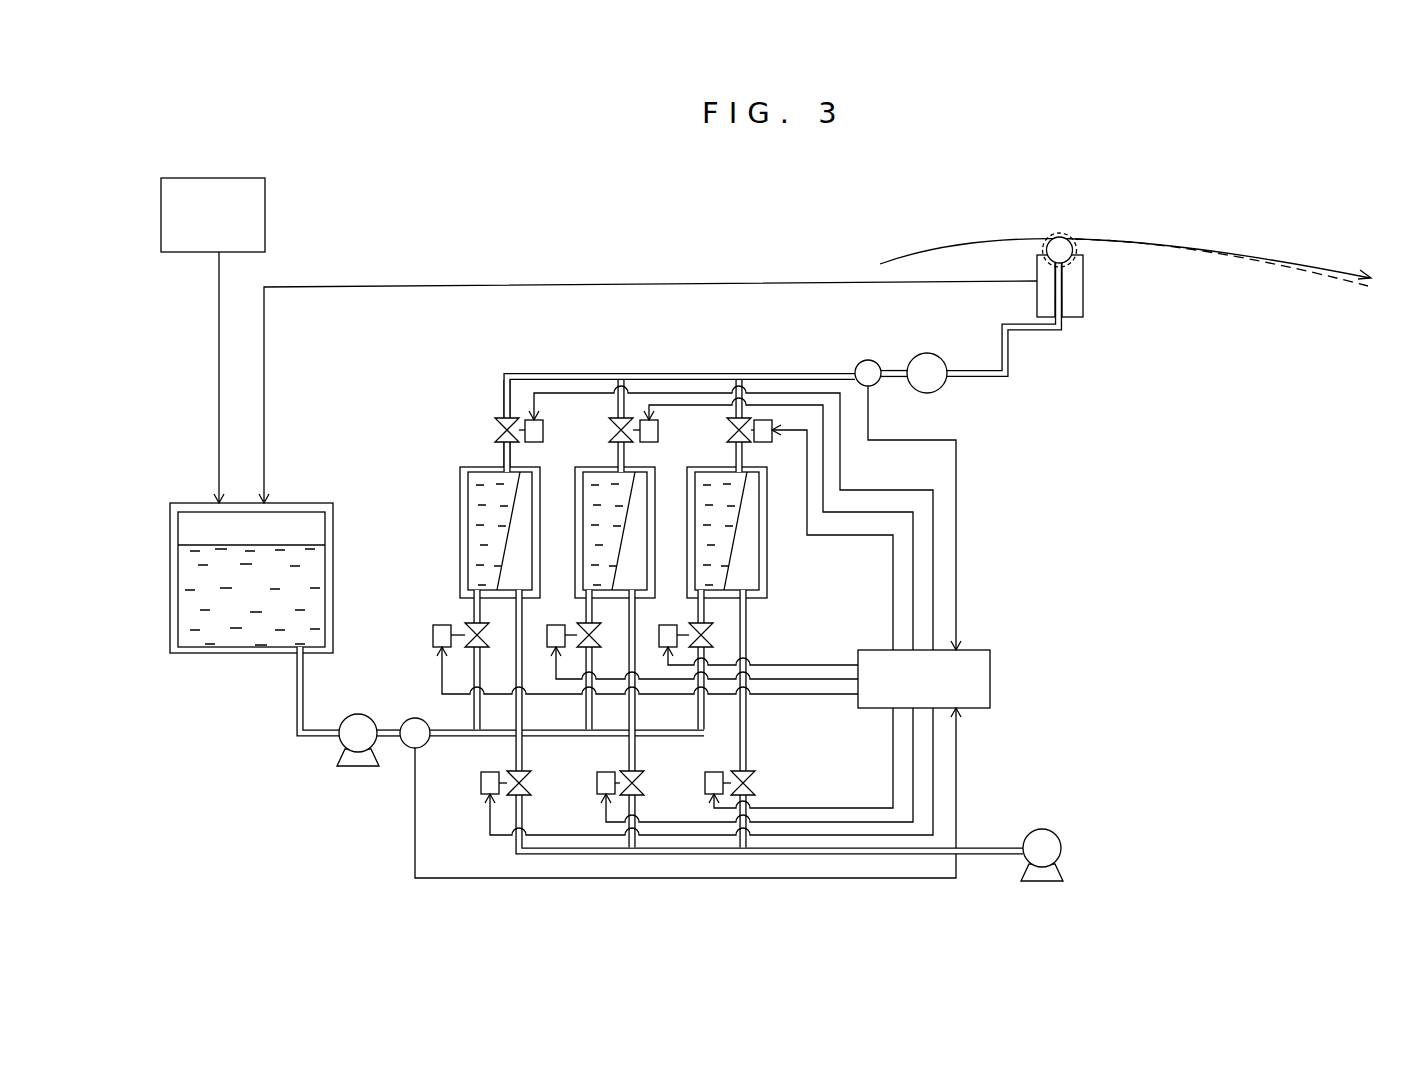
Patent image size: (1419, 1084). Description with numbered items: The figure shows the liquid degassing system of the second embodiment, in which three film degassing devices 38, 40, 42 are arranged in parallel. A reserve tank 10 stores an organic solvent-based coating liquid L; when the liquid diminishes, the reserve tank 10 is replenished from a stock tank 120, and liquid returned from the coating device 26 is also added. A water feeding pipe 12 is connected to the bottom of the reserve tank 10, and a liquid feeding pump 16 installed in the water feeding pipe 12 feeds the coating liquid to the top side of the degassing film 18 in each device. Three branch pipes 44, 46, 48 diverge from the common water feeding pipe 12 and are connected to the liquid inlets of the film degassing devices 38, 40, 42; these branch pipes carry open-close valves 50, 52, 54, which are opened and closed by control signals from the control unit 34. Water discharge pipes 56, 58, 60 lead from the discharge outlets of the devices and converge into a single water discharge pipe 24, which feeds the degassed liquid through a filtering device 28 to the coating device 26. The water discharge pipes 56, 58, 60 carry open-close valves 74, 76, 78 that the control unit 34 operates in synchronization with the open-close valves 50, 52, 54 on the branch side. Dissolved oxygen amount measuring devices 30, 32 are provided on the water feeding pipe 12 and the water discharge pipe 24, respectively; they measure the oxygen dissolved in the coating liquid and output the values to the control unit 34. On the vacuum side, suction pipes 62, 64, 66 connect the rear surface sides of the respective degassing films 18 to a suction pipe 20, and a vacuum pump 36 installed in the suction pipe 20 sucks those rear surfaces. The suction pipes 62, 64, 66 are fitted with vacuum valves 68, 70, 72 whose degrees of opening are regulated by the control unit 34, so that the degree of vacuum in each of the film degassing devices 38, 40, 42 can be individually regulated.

The stock tank 120 is at (268, 214).
The reserve tank 10 is at (290, 503).
The coating liquid L is at (320, 612).
The water feeding pipe 12 is at (398, 728).
The liquid feeding pump 16 is at (355, 716).
The degassing film 18 is at (517, 512).
The suction pipe 20 is at (888, 857).
The water discharge pipe 24 is at (780, 370).
The coating device 26 is at (1084, 292).
The filtering device 28 is at (927, 352).
The dissolved oxygen amount measuring device 30 is at (407, 748).
The dissolved oxygen amount measuring device 32 is at (868, 360).
The control unit 34 is at (990, 690).
The vacuum pump 36 is at (1045, 829).
The film degassing device 38 is at (460, 490).
The film degassing device 40 is at (574, 470).
The film degassing device 42 is at (766, 580).
The branch pipe 44 is at (465, 632).
The branch pipe 46 is at (585, 712).
The branch pipe 48 is at (697, 712).
The open-close valve 50 is at (433, 636).
The open-close valve 52 is at (556, 650).
The open-close valve 54 is at (675, 618).
The water discharge pipe 56 is at (502, 395).
The water discharge pipe 58 is at (613, 400).
The water discharge pipe 60 is at (733, 398).
The suction pipe 62 is at (508, 752).
The suction pipe 64 is at (596, 760).
The suction pipe 66 is at (749, 737).
The vacuum valve 68 is at (480, 792).
The vacuum valve 70 is at (641, 788).
The vacuum valve 72 is at (757, 781).
The open-close valve 74 is at (494, 430).
The open-close valve 76 is at (637, 410).
The open-close valve 78 is at (767, 443).